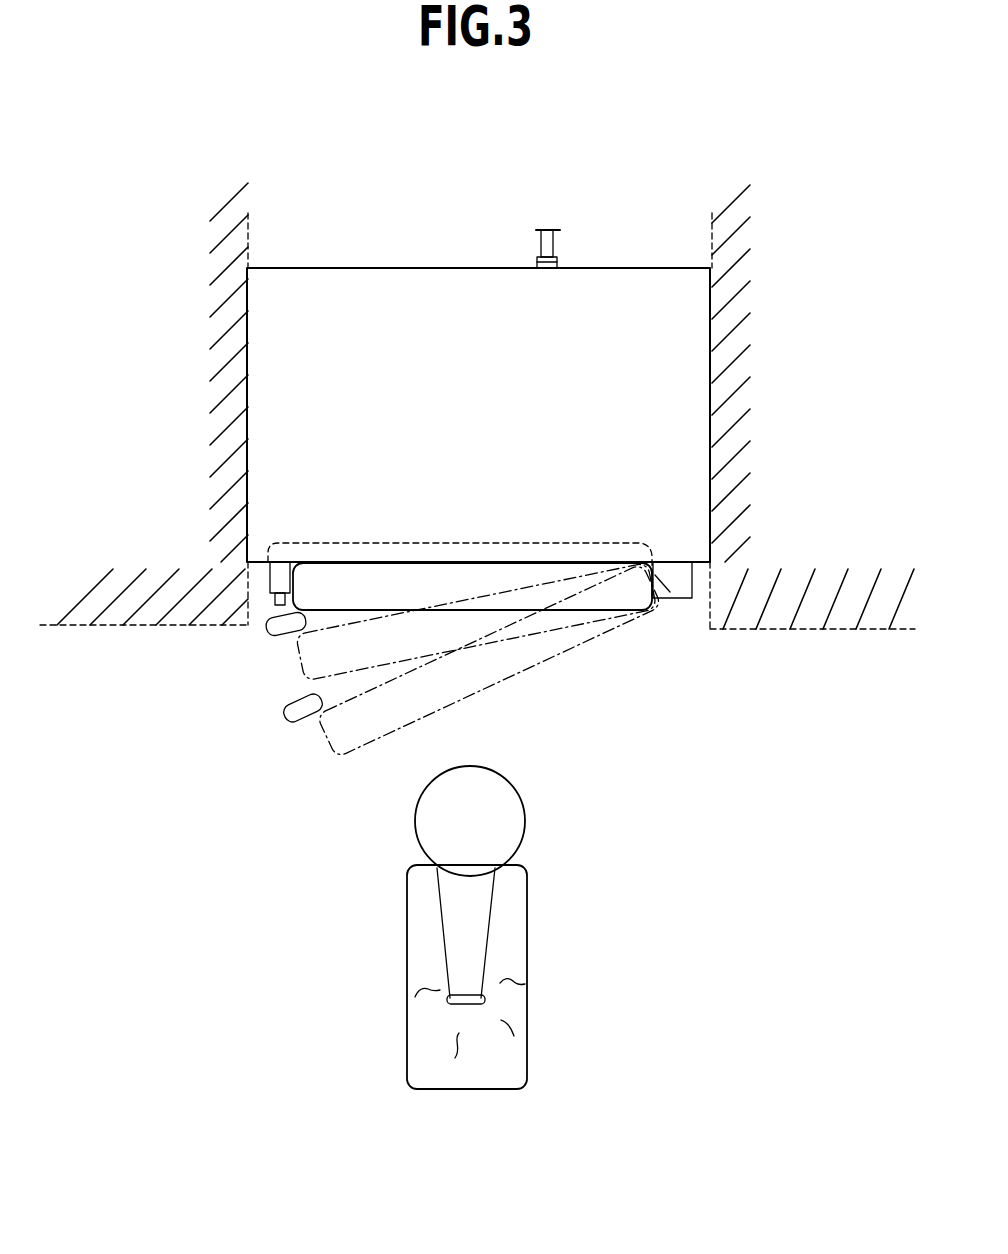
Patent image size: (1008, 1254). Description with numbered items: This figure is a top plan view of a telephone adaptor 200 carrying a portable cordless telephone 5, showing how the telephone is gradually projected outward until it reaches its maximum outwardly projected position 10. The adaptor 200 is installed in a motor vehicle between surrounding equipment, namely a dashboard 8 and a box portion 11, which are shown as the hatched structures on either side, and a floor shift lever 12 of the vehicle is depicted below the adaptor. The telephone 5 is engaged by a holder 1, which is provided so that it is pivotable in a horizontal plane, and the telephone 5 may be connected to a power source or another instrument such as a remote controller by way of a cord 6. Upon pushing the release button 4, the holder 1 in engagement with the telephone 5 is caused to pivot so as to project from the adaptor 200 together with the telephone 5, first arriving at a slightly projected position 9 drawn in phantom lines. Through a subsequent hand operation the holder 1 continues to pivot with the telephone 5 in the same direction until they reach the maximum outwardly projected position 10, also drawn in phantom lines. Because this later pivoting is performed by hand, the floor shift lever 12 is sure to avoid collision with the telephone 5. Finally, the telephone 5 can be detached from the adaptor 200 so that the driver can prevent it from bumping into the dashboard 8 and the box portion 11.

The telephone adaptor 200 is at (387, 250).
The cord 6 is at (553, 243).
The release button 4 is at (272, 579).
The portable cordless telephone 5 is at (312, 602).
The slightly projected position 9 is at (303, 634).
The maximum outwardly projected position 10 is at (322, 712).
The holder 1 is at (678, 578).
The box portion 11 is at (149, 612).
The dashboard 8 is at (817, 596).
The floor shift lever 12 is at (505, 810).